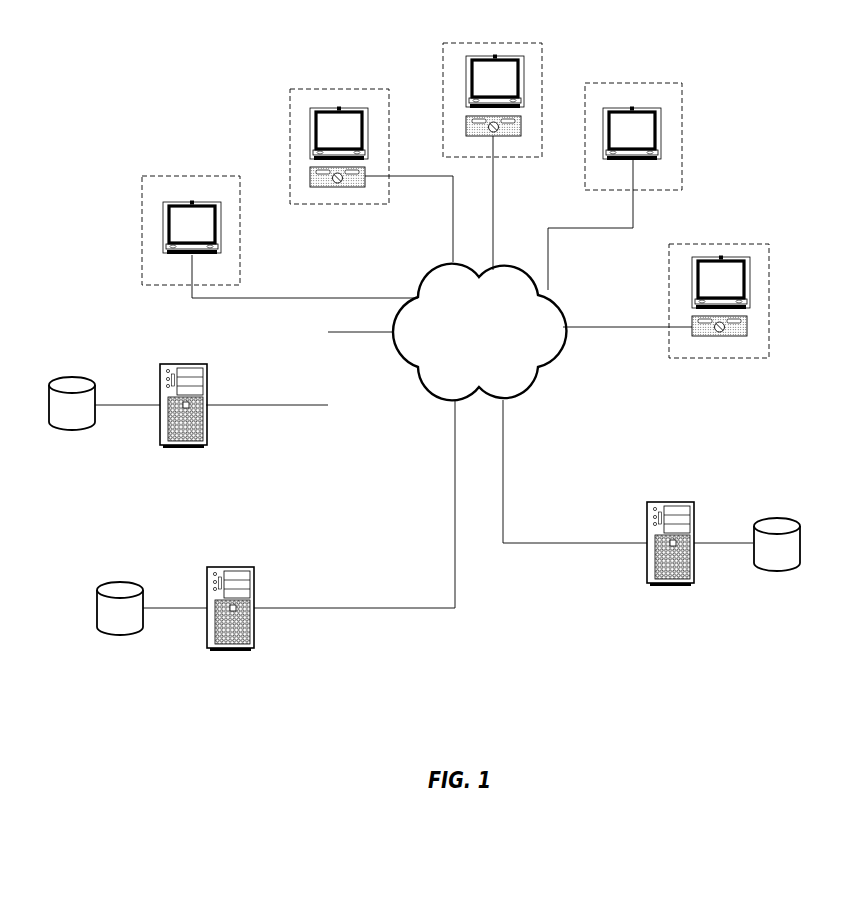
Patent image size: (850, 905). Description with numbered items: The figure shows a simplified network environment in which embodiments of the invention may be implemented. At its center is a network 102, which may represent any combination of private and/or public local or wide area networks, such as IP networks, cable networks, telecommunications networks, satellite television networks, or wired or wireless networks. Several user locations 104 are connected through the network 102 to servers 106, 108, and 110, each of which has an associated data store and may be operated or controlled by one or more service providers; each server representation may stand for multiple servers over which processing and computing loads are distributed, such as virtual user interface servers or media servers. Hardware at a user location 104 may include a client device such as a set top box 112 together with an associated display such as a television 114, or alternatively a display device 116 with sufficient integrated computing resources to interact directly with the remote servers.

The network 102 is at (432, 272).
The user location 104 is at (442, 189).
The server 106 is at (183, 364).
The server 108 is at (228, 567).
The server 110 is at (670, 502).
The set top box 112 is at (745, 325).
The television 114 is at (718, 258).
The display device 116 is at (193, 203).